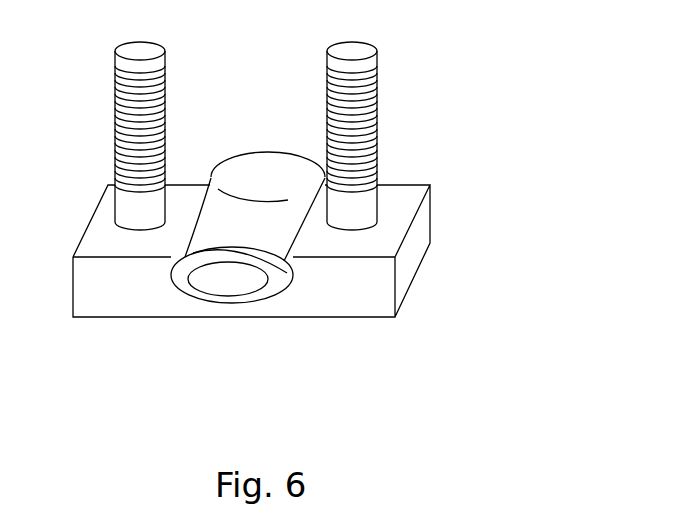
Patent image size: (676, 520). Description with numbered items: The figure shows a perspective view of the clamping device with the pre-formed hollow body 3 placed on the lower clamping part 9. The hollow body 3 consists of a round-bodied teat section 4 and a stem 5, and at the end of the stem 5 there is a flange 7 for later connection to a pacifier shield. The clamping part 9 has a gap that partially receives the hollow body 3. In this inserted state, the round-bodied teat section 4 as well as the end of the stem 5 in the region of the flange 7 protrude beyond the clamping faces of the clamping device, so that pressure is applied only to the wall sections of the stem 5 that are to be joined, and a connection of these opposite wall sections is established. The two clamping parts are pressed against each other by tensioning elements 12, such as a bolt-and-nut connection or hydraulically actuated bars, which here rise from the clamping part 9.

The pre-formed hollow body 3 is at (282, 205).
The teat section 4 is at (260, 177).
The stem 5 is at (270, 228).
The flange 7 is at (182, 278).
The clamping part 9 is at (125, 283).
The tensioning elements 12 is at (365, 120).